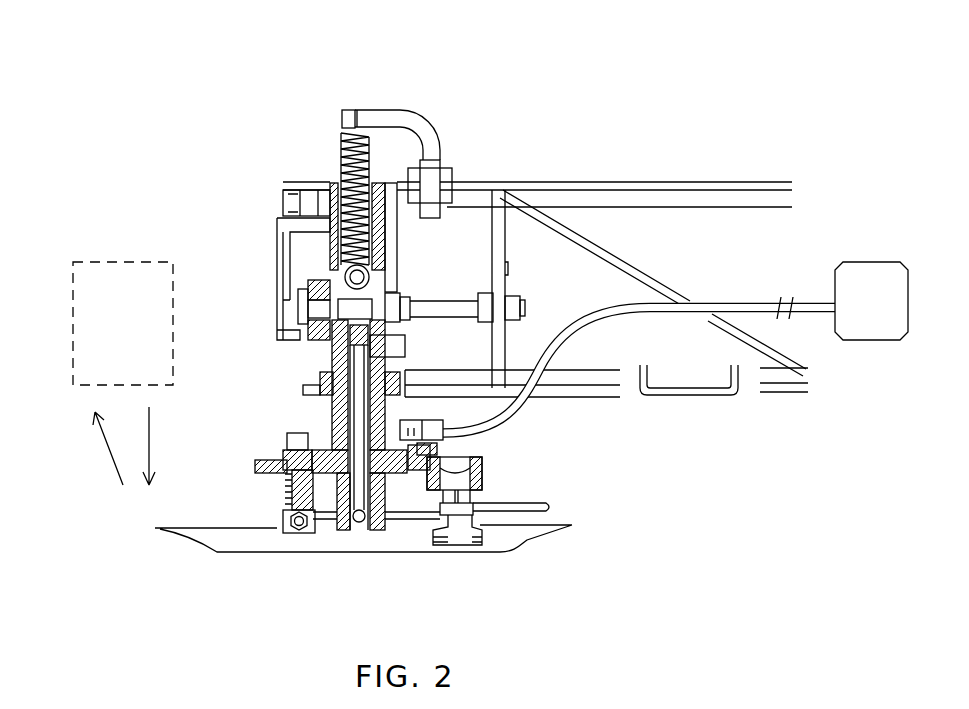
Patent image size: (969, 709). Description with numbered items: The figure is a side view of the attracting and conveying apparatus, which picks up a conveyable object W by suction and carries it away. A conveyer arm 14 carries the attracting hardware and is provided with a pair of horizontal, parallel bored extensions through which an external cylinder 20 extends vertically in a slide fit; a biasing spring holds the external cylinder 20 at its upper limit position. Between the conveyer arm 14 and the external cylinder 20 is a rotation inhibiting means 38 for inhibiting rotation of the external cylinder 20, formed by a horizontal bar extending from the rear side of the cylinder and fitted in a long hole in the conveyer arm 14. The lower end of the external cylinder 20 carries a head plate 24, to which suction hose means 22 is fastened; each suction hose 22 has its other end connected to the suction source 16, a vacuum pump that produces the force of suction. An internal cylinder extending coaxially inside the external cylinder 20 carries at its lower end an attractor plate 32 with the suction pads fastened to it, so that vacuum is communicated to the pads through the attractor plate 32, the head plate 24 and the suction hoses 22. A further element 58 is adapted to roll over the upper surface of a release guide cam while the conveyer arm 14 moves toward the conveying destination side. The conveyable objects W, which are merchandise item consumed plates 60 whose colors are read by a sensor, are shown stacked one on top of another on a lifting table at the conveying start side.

The conveyer arm 14 is at (655, 180).
The suction source 16 is at (870, 262).
The external cylinder 20 is at (338, 435).
The suction hose means 22 is at (527, 410).
The head plate 24 is at (287, 453).
The attractor plate 32 is at (255, 468).
The rotation inhibiting means 38 is at (475, 272).
The release guide cam roller 58 is at (395, 292).
The merchandise item consumed plates 60 is at (112, 262).
The conveyable object W is at (527, 540).